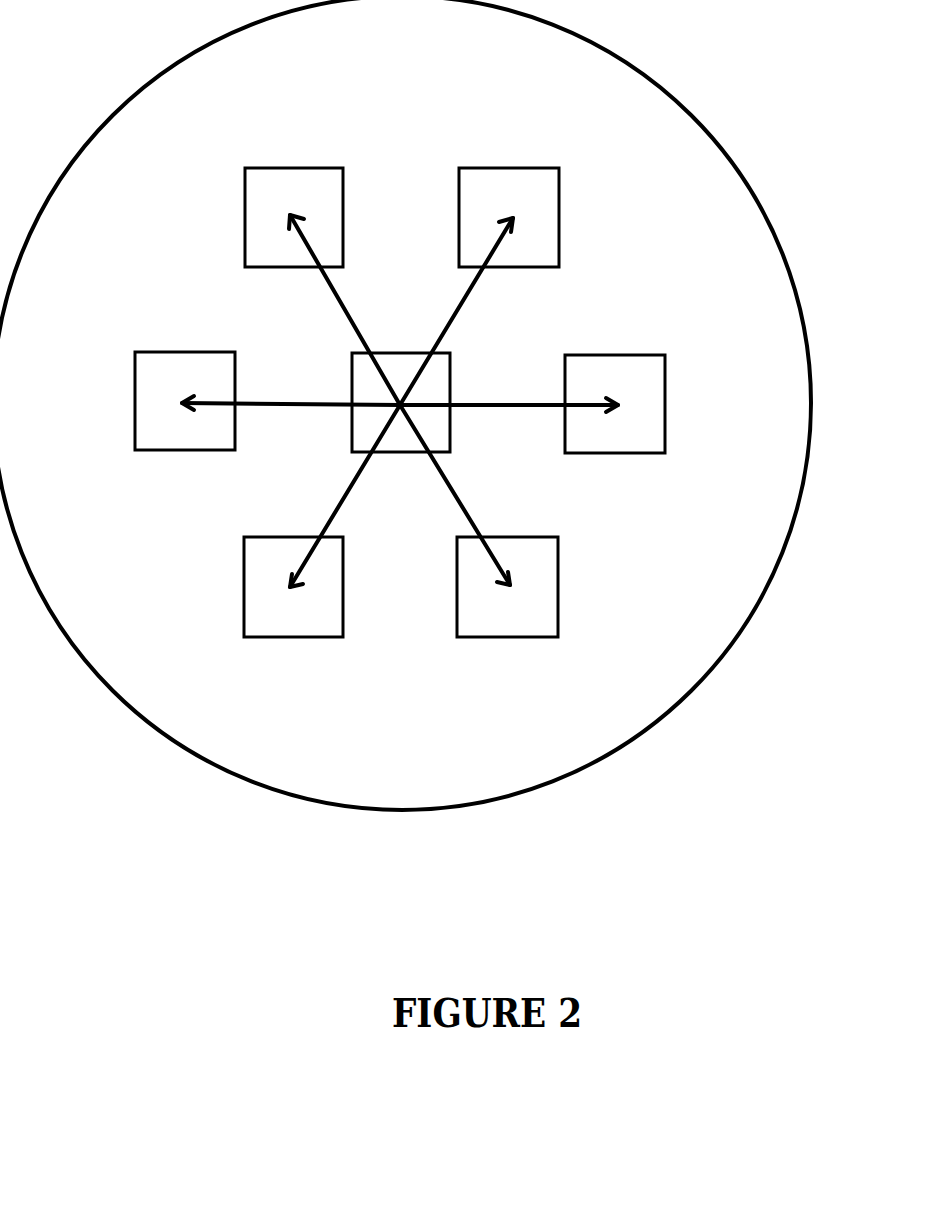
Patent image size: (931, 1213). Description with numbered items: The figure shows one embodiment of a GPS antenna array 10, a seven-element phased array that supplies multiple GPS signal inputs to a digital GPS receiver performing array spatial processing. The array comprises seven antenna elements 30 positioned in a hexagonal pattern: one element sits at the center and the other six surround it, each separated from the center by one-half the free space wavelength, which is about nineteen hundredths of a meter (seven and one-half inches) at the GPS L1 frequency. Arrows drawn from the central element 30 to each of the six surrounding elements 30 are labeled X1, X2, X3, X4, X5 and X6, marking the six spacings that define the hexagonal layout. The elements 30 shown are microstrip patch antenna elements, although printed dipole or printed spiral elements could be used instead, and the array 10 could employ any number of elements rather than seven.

The GPS antenna array 10 is at (683, 100).
The antenna element 30 is at (272, 166).
The displacement vector X1 is at (507, 303).
The displacement vector X2 is at (540, 438).
The displacement vector X3 is at (495, 525).
The displacement vector X4 is at (367, 525).
The displacement vector X5 is at (287, 438).
The displacement vector X6 is at (318, 303).